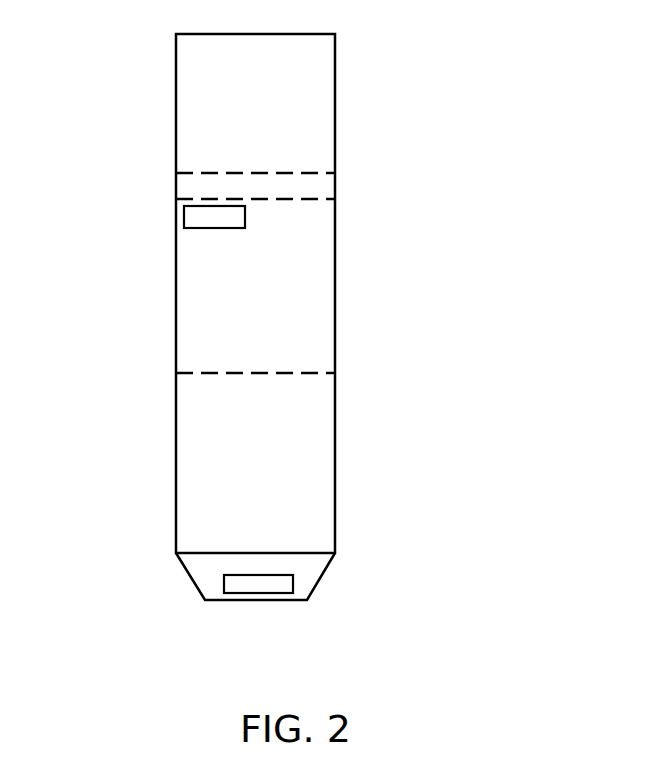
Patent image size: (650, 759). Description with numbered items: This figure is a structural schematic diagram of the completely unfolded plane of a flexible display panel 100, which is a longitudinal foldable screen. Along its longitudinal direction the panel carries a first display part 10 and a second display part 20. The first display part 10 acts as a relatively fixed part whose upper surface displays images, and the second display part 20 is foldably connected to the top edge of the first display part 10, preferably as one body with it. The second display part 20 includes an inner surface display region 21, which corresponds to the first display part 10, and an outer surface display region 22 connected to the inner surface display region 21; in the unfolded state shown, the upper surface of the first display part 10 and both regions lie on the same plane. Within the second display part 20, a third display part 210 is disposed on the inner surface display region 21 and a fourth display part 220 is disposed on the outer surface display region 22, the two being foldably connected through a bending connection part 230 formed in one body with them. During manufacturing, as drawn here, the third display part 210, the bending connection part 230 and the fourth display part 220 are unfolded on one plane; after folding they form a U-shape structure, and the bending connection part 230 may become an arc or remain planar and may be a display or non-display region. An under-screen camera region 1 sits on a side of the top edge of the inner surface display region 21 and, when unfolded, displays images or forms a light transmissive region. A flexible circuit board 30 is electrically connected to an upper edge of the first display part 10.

The flexible display panel 100 is at (102, 56).
The first display part 10 is at (311, 452).
The second display part 20 is at (452, 63).
The inner surface display region 21 is at (300, 285).
The outer surface display region 22 is at (297, 127).
The bending connection part 230 is at (300, 187).
The third display part 210 is at (215, 134).
The fourth display part 220 is at (215, 311).
The under-screen camera region 1 is at (215, 217).
The flexible circuit board 30 is at (310, 572).